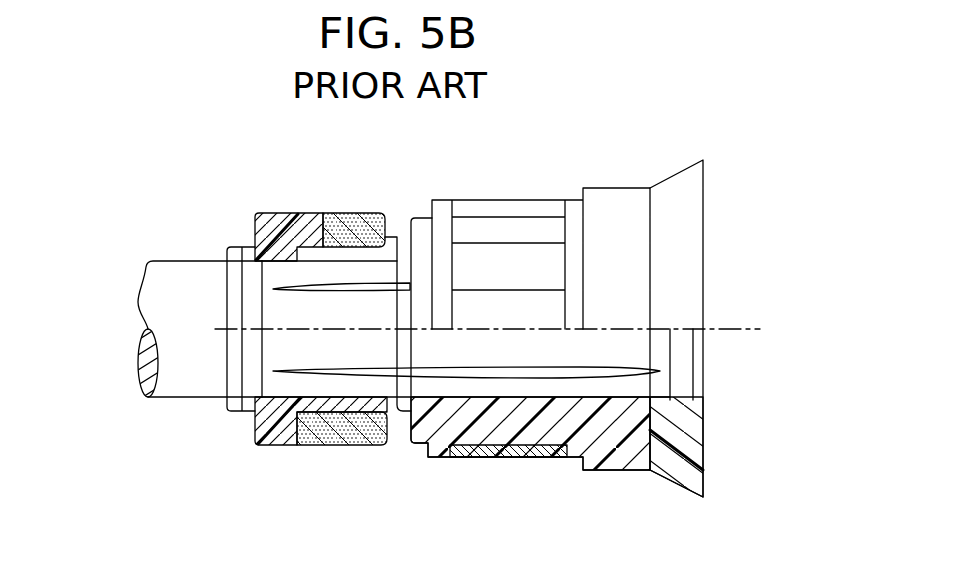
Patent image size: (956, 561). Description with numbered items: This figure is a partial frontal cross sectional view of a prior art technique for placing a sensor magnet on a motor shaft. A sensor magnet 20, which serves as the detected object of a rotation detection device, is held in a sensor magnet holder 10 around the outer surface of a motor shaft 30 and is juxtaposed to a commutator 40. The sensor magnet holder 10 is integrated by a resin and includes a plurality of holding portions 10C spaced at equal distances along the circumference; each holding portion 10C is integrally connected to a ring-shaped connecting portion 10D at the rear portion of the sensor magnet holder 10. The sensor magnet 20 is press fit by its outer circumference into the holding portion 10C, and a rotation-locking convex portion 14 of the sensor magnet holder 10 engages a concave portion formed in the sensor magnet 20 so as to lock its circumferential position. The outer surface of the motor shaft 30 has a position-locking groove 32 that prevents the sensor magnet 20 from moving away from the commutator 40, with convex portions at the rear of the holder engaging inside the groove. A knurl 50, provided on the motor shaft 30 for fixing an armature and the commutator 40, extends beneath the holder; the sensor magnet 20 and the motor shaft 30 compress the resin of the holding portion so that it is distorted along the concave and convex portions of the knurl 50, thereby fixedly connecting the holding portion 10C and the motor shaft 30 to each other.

The sensor magnet holder 10 is at (246, 428).
The holding portion 10C is at (385, 441).
The ring-shaped connecting portion 10D is at (277, 446).
The rotation-locking convex portion 14 is at (228, 402).
The sensor magnet 20 is at (337, 221).
The motor shaft 30 is at (165, 287).
The position-locking groove 32 is at (230, 290).
The commutator 40 is at (524, 212).
The knurl 50 is at (378, 270).